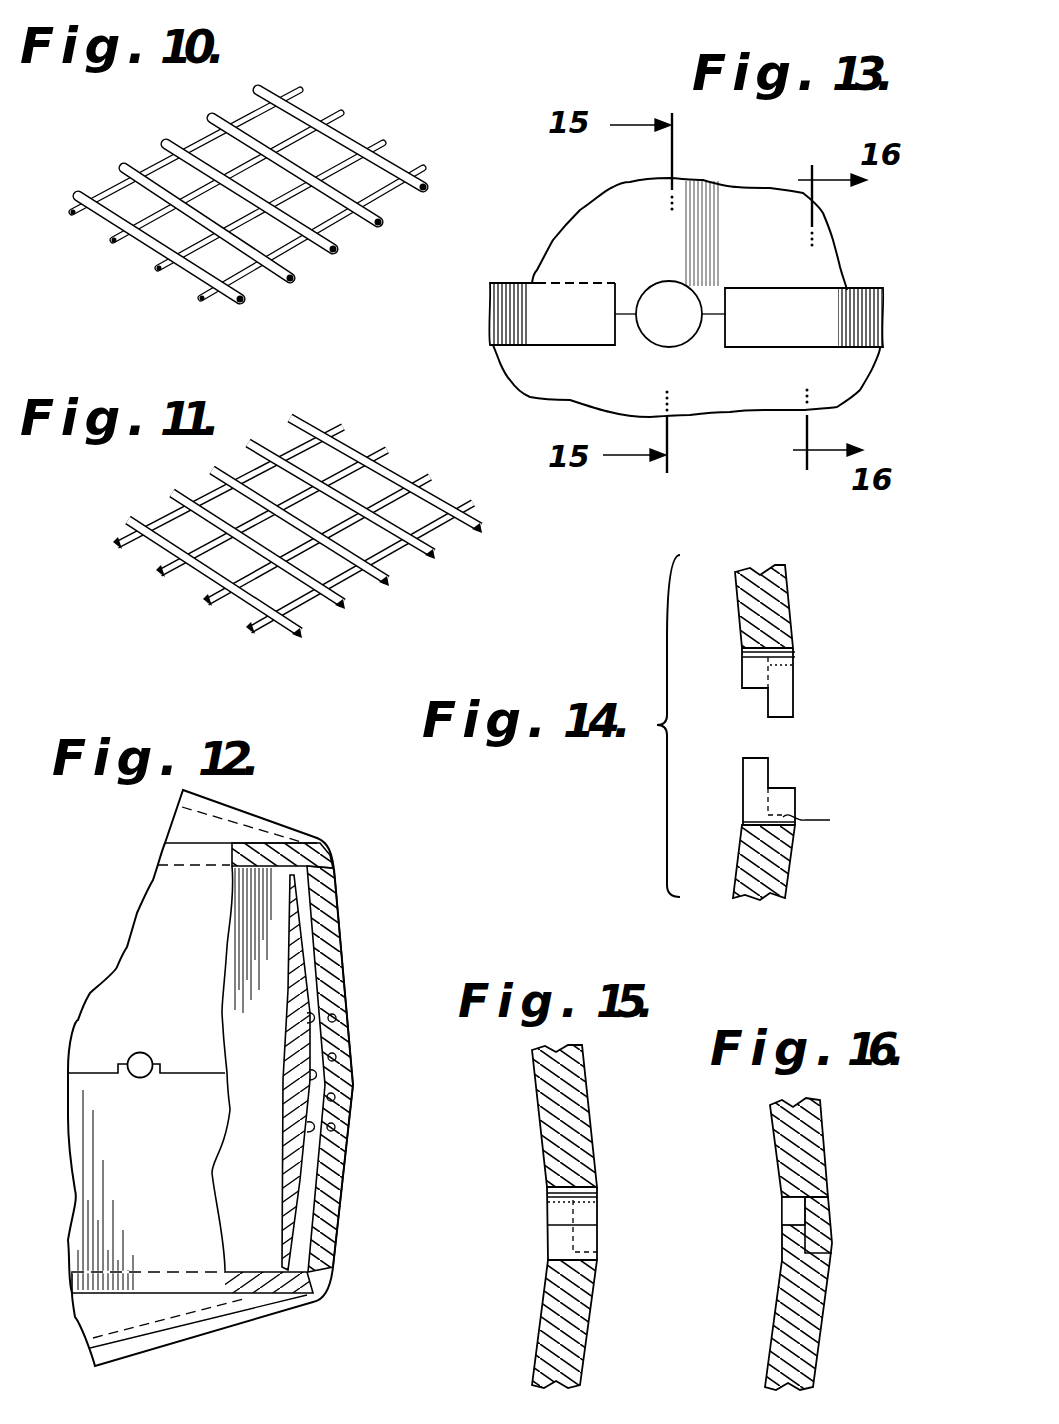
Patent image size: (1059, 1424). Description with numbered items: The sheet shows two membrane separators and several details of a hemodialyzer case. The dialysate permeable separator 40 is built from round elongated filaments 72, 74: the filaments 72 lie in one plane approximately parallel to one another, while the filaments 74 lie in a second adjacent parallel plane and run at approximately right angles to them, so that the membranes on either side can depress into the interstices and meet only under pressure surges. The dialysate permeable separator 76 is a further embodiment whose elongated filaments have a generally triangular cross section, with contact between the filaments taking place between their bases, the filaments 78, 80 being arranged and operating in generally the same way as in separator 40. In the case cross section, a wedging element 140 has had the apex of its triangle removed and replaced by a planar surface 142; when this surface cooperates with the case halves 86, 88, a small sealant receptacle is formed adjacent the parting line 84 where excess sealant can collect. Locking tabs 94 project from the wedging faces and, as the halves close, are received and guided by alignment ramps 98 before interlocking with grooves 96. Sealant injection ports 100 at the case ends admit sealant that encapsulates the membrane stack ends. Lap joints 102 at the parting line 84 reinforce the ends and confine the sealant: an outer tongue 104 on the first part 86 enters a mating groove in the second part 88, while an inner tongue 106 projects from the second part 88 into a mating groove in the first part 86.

In FIG. 10, the dialysate permeable separator 40 is at (227, 196).
In FIG. 10, the filaments 72 is at (377, 222).
In FIG. 10, the filaments 74 is at (155, 268).
In FIG. 11, the dialysate permeable separator 76 is at (257, 528).
In FIG. 11, the upper bars 78 is at (478, 530).
In FIG. 11, the lower bars 80 is at (207, 602).
In FIG. 13, the parting line 84 is at (708, 320).
In FIG. 12, the parting line 84 is at (353, 1070).
In FIG. 15, the parting line 84 is at (598, 1227).
In FIG. 13, the first part 86 is at (753, 202).
In FIG. 14, the first part 86 is at (768, 580).
In FIG. 12, the first part 86 is at (323, 882).
In FIG. 15, the first part 86 is at (567, 1072).
In FIG. 16, the first part 86 is at (808, 1117).
In FIG. 13, the second part 88 is at (757, 392).
In FIG. 14, the second part 88 is at (775, 880).
In FIG. 12, the second part 88 is at (323, 1237).
In FIG. 15, the second part 88 is at (562, 1352).
In FIG. 16, the second part 88 is at (800, 1352).
In FIG. 12, the locking tabs 94 is at (307, 1018).
In FIG. 12, the grooves 96 is at (335, 1016).
In FIG. 12, the alignment ramps 98 is at (335, 1056).
In FIG. 13, the sealant injection ports 100 is at (657, 287).
In FIG. 14, the sealant injection ports 100 is at (828, 819).
In FIG. 12, the sealant injection ports 100 is at (137, 1053).
In FIG. 15, the sealant injection ports 100 is at (563, 1262).
In FIG. 13, the lap joints 102 is at (701, 291).
In FIG. 14, the lap joints 102 is at (795, 731).
In FIG. 15, the lap joints 102 is at (586, 1216).
In FIG. 16, the lap joints 102 is at (817, 1242).
In FIG. 13, the outer tongue 104 is at (553, 327).
In FIG. 14, the outer tongue 104 is at (787, 698).
In FIG. 16, the outer tongue 104 is at (818, 1243).
In FIG. 13, the inner tongue 106 is at (862, 303).
In FIG. 14, the inner tongue 106 is at (757, 764).
In FIG. 16, the inner tongue 106 is at (795, 1218).
In FIG. 12, the wedging element 140 is at (293, 942).
In FIG. 12, the planar surface 142 is at (309, 1075).